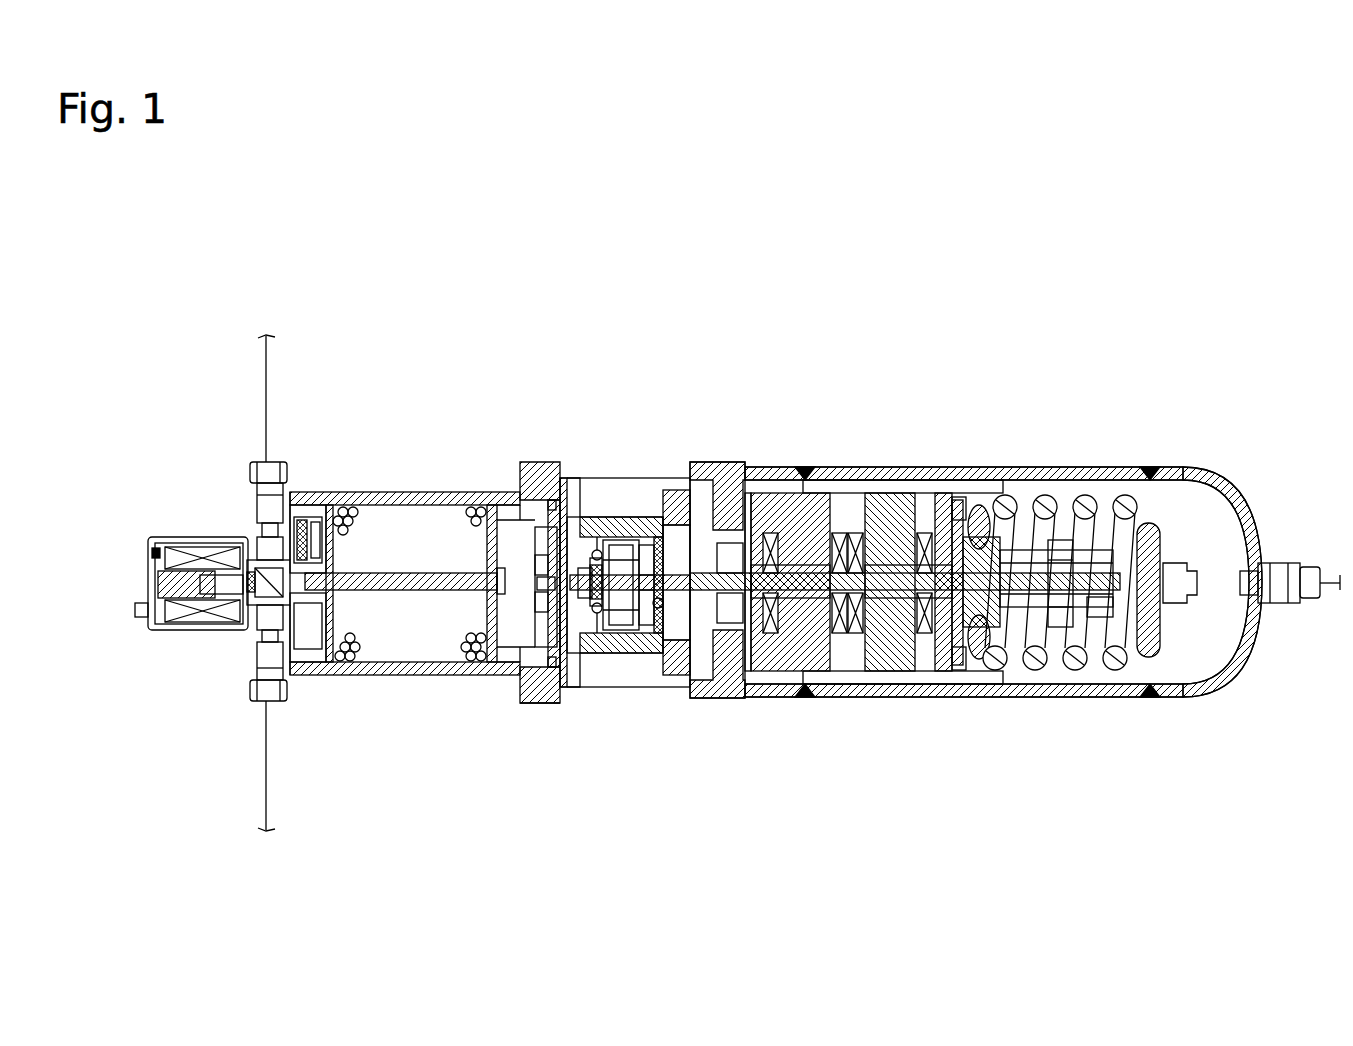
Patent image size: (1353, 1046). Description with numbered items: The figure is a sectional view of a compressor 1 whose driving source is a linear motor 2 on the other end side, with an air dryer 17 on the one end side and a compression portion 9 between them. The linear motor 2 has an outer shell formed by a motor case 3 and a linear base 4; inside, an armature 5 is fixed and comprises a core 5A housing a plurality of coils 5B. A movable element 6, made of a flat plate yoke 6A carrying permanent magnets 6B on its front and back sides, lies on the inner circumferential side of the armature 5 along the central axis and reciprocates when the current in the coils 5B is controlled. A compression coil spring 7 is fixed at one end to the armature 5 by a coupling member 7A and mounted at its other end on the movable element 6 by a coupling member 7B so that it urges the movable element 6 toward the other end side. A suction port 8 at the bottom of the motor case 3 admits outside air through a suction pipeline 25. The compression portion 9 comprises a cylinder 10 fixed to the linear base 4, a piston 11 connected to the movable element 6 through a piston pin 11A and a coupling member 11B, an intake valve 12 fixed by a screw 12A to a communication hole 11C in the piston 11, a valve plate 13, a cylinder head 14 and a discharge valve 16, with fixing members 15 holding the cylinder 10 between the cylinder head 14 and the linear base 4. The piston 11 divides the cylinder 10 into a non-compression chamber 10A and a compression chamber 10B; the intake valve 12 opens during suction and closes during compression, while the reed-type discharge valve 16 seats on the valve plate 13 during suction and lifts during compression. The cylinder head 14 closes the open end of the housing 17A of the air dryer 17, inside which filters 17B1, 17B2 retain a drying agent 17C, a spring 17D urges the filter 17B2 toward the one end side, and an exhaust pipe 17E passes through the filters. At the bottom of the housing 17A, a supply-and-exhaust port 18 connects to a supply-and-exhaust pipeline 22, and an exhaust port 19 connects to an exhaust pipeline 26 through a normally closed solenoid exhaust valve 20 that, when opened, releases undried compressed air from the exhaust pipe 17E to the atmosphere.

The compressor 1 is at (441, 292).
The linear motor 2 is at (976, 553).
The motor case 3 is at (1052, 698).
The linear base 4 is at (692, 698).
The armature 5 is at (877, 634).
The core 5A is at (834, 697).
The coils 5B is at (938, 697).
The movable element 6 is at (905, 507).
The yoke 6A is at (800, 560).
The permanent magnets 6B is at (885, 555).
The spring 7 is at (1085, 690).
The coupling member 7A is at (973, 530).
The coupling member 7B is at (1175, 565).
The suction port 8 is at (1283, 604).
The compression portion 9 is at (629, 583).
The cylinder 10 is at (615, 653).
The non-compression chamber 10A is at (684, 490).
The compression chamber 10B is at (572, 490).
The piston 11 is at (642, 655).
The piston pin 11A is at (625, 655).
The coupling member 11B is at (645, 517).
The communication hole 11C is at (597, 517).
The intake valve 12 is at (600, 655).
The screw 12A is at (588, 655).
The valve plate 13 is at (563, 650).
The cylinder head 14 is at (545, 470).
The fixing members 15 is at (665, 655).
The discharge valve 16 is at (553, 703).
The air dryer 17 is at (412, 526).
The housing 17A is at (430, 492).
The filter 17B1 is at (335, 676).
The filter 17B2 is at (490, 676).
The drying agent 17C is at (440, 676).
The spring 17D is at (498, 492).
The exhaust pipe 17E is at (345, 505).
The supply-and-exhaust port 18 is at (262, 460).
The exhaust port 19 is at (276, 705).
The exhaust valve 20 is at (210, 535).
The supply-and-exhaust pipeline 22 is at (269, 420).
The suction pipeline 25 is at (1333, 592).
The exhaust pipeline 26 is at (264, 725).